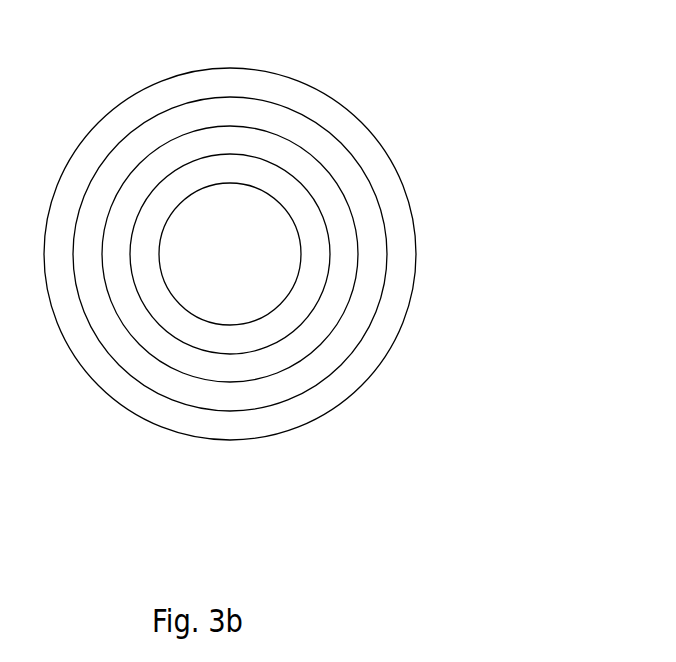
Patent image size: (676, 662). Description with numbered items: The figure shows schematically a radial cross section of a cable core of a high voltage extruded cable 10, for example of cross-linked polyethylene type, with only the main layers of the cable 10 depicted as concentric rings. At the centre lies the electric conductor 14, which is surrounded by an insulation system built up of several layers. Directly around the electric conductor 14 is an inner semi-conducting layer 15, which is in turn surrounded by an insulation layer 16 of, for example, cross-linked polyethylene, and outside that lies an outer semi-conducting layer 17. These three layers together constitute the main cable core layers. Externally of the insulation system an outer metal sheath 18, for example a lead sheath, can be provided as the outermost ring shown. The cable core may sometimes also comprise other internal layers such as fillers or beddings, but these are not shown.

The cable 10 is at (188, 457).
The electric conductor 14 is at (255, 298).
The inner semi-conducting layer 15 is at (307, 290).
The insulation layer 16 is at (345, 270).
The outer semi-conducting layer 17 is at (357, 200).
The outer metal sheath 18 is at (333, 112).